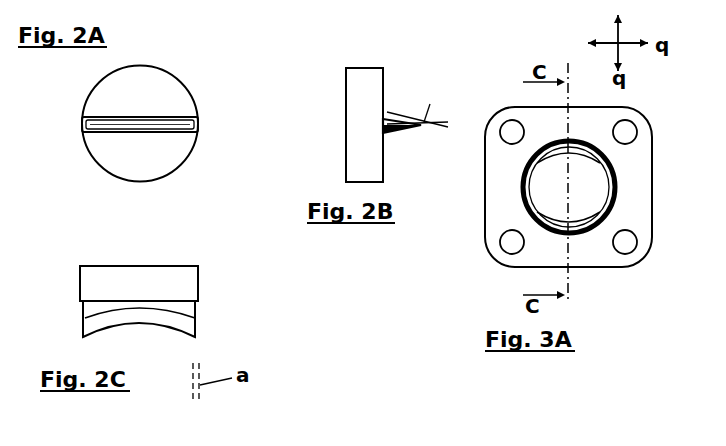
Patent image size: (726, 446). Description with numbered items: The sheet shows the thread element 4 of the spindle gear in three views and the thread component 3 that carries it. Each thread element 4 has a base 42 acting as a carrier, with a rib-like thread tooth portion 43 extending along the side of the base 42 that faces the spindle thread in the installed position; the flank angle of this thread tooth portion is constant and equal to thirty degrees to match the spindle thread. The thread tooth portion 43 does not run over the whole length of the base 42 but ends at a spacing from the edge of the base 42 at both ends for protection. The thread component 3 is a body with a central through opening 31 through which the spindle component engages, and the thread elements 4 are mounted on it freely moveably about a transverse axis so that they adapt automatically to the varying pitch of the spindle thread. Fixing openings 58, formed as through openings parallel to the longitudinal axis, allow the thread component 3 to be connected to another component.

In FIG. 3A, the thread component 3 is at (507, 99).
In FIG. 2A, the thread element 4 is at (176, 71).
In FIG. 2B, the thread element 4 is at (343, 65).
In FIG. 2C, the thread element 4 is at (195, 262).
In FIG. 3A, the thread element 4 is at (588, 146).
In FIG. 3A, the through opening 31 is at (560, 196).
In FIG. 2A, the base 42 is at (187, 90).
In FIG. 2B, the base 42 is at (346, 167).
In FIG. 2C, the base 42 is at (198, 280).
In FIG. 2A, the thread tooth portion 43 is at (197, 124).
In FIG. 2B, the thread tooth portion 43 is at (390, 125).
In FIG. 2C, the thread tooth portion 43 is at (195, 325).
In FIG. 3A, the thread tooth portion 43 is at (557, 217).
In FIG. 3A, the fixing openings 58 is at (510, 241).